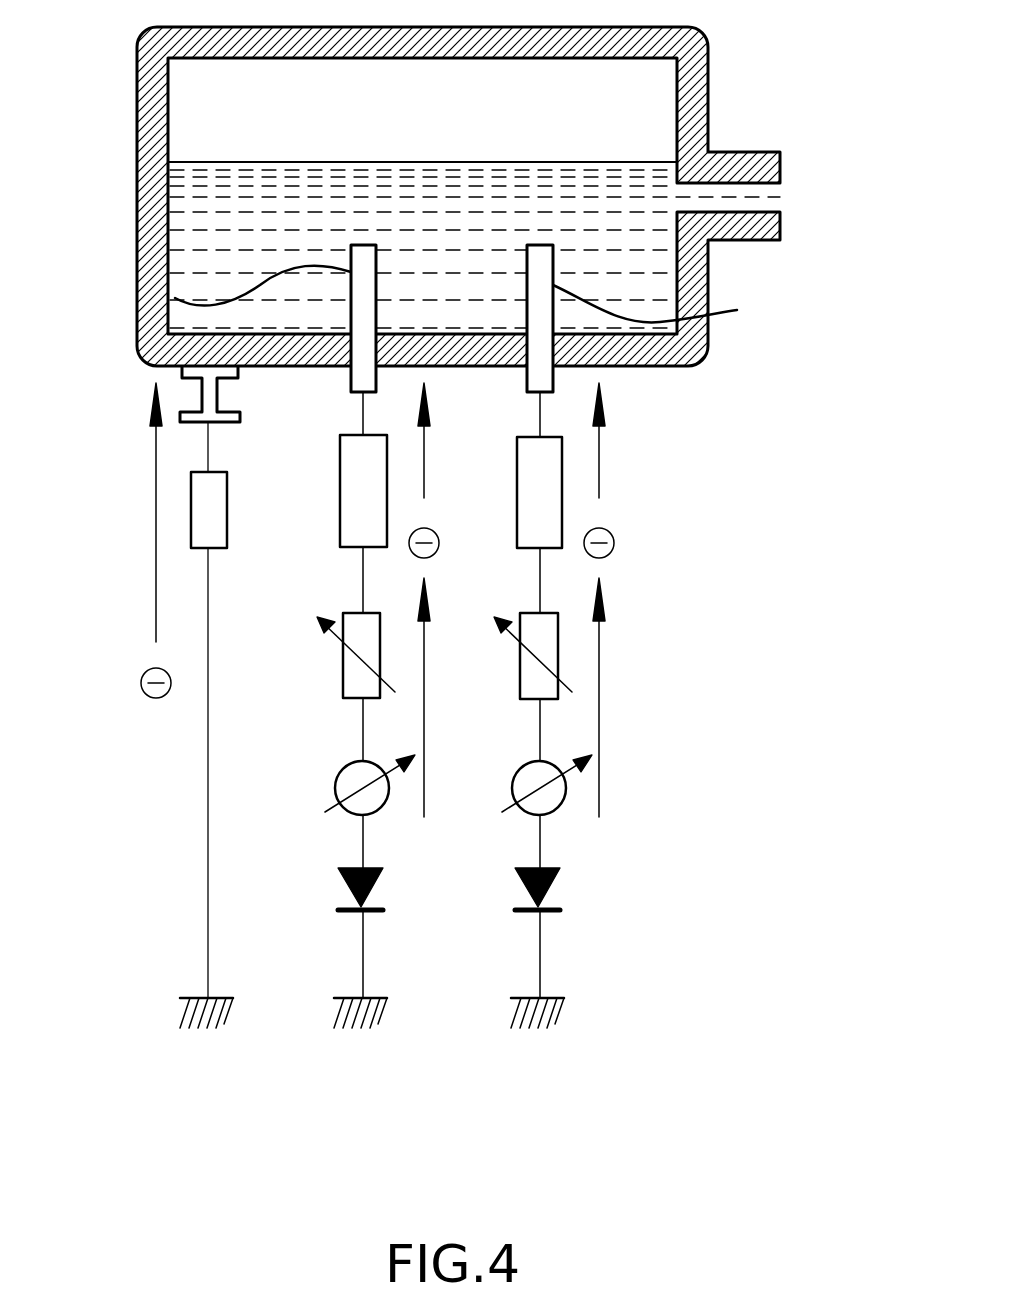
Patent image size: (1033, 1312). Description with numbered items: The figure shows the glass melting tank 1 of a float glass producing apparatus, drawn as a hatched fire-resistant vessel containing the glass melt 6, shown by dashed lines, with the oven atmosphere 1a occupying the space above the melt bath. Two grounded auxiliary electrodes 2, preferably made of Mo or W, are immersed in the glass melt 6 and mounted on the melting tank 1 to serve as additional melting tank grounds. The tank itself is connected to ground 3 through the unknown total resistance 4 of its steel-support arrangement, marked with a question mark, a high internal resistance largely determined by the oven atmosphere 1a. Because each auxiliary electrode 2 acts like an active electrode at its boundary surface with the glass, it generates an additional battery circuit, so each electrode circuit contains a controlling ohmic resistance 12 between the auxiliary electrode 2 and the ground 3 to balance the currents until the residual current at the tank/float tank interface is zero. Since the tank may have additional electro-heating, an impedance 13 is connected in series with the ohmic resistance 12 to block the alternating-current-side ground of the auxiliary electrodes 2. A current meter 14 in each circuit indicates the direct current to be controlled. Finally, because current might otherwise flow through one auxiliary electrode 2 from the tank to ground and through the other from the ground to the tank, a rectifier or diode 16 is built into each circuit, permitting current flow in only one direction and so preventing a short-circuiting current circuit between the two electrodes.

The melting tank 1 is at (140, 32).
The oven atmosphere 1a is at (610, 108).
The glass melt 6 is at (185, 222).
The auxiliary electrode 2 is at (175, 298).
The resistance 4 is at (227, 510).
The impedance 13 is at (340, 487).
The controlling ohmic resistance 12 is at (343, 655).
The current meter 14 is at (335, 790).
The diode 16 is at (341, 876).
The ground 3 is at (532, 1033).